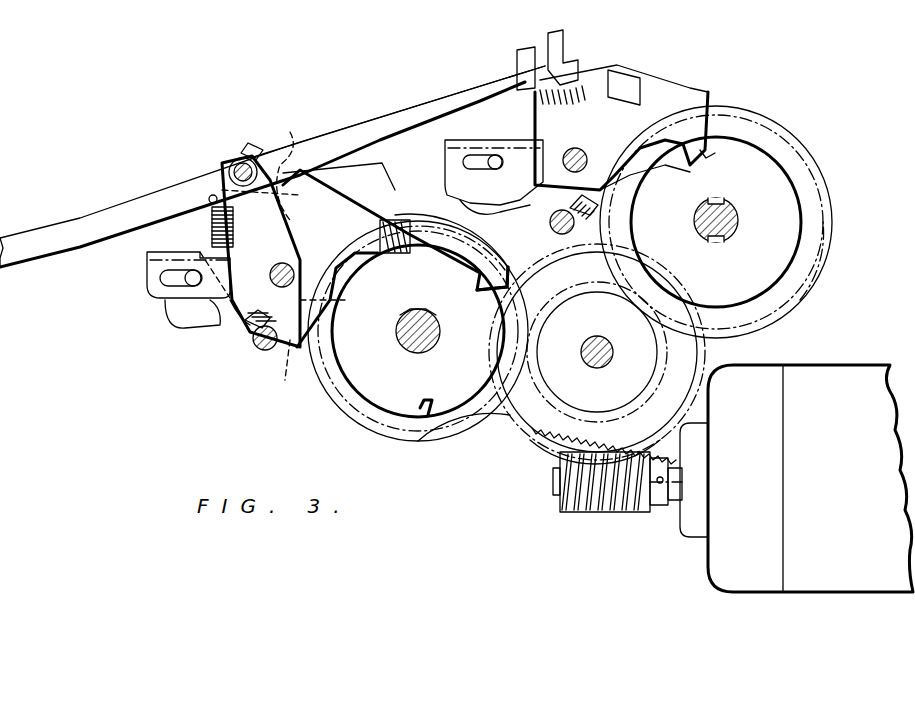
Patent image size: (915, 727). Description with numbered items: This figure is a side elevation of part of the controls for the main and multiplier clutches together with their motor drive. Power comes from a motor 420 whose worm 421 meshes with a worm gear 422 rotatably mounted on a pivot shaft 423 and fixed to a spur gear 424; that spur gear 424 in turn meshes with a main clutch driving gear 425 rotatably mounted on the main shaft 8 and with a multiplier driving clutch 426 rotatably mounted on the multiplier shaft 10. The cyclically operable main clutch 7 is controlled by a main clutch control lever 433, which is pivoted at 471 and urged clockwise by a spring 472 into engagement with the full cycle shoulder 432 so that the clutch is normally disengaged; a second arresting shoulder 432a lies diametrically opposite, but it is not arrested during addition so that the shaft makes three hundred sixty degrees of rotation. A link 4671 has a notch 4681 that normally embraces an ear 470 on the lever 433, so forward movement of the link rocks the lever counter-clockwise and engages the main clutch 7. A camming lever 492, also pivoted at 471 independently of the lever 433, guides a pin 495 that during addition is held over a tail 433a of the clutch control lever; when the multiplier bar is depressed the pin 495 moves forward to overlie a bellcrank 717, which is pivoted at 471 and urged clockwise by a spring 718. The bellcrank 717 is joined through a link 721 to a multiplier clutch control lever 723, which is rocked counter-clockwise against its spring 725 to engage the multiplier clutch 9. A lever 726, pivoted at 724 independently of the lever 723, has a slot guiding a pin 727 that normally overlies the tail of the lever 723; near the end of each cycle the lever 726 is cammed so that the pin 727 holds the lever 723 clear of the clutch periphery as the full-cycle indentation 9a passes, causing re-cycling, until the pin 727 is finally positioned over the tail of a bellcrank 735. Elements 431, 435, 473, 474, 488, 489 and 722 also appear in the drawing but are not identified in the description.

The main clutch 7 is at (373, 424).
The main shaft 8 is at (408, 352).
The multiplier clutch 9 is at (822, 216).
The full-cycle indentation 9a is at (716, 162).
The multiplier shaft 10 is at (740, 218).
The motor 420 is at (838, 365).
The worm 421 is at (570, 512).
The worm gear 422 is at (558, 452).
The pivot shaft 423 is at (592, 338).
The spur gear 424 is at (655, 385).
The main clutch driving gear 425 is at (425, 448).
The multiplier driving clutch 426 is at (810, 292).
The cam 431 is at (450, 390).
The full cycle shoulder 432 is at (396, 258).
The arresting shoulder 432a is at (420, 410).
The main clutch control lever 433 is at (430, 175).
The tail 433a is at (185, 330).
The arm edge 435 is at (470, 200).
The link 4671 is at (122, 218).
The notch 4681 is at (282, 132).
The ear 470 is at (222, 172).
The pivot 471 is at (292, 266).
The spring 472 is at (278, 355).
The lever arm 473 is at (346, 300).
The spring 474 is at (250, 340).
The spring 488 is at (205, 218).
The lever tip 489 is at (488, 292).
The camming lever 492 is at (150, 270).
The pin 495 is at (198, 252).
The bellcrank 717 is at (162, 310).
The spring 718 is at (292, 380).
The link 721 is at (487, 96).
The clamp 722 is at (560, 80).
The multiplier clutch control lever 723 is at (700, 108).
The pivot 724 is at (580, 150).
The spring 725 is at (550, 225).
The lever 726 is at (478, 132).
The pin 727 is at (494, 156).
The bellcrank 735 is at (495, 207).